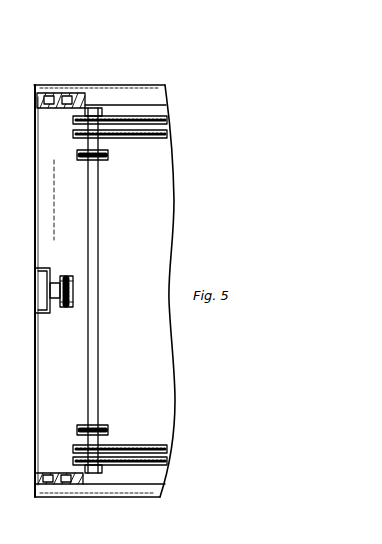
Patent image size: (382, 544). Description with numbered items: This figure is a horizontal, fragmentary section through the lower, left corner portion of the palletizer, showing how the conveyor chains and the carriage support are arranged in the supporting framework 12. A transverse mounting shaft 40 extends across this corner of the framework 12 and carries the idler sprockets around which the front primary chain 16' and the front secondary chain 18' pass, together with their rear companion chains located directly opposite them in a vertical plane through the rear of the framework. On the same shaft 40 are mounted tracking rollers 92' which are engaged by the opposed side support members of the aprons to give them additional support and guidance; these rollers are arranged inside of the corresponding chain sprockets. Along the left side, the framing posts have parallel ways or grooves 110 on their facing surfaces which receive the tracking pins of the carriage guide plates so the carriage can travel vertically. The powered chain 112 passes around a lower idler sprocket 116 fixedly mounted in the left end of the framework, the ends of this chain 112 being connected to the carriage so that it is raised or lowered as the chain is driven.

The supporting framework 12 is at (145, 480).
The ways or grooves 110 is at (65, 99).
The transverse mounting shaft 40 is at (93, 227).
The tracking roller 92' is at (102, 416).
The secondary chain 18' is at (141, 443).
The primary chain 16' is at (141, 465).
The powered chain 112 is at (67, 313).
The idler sprocket 116 is at (68, 276).